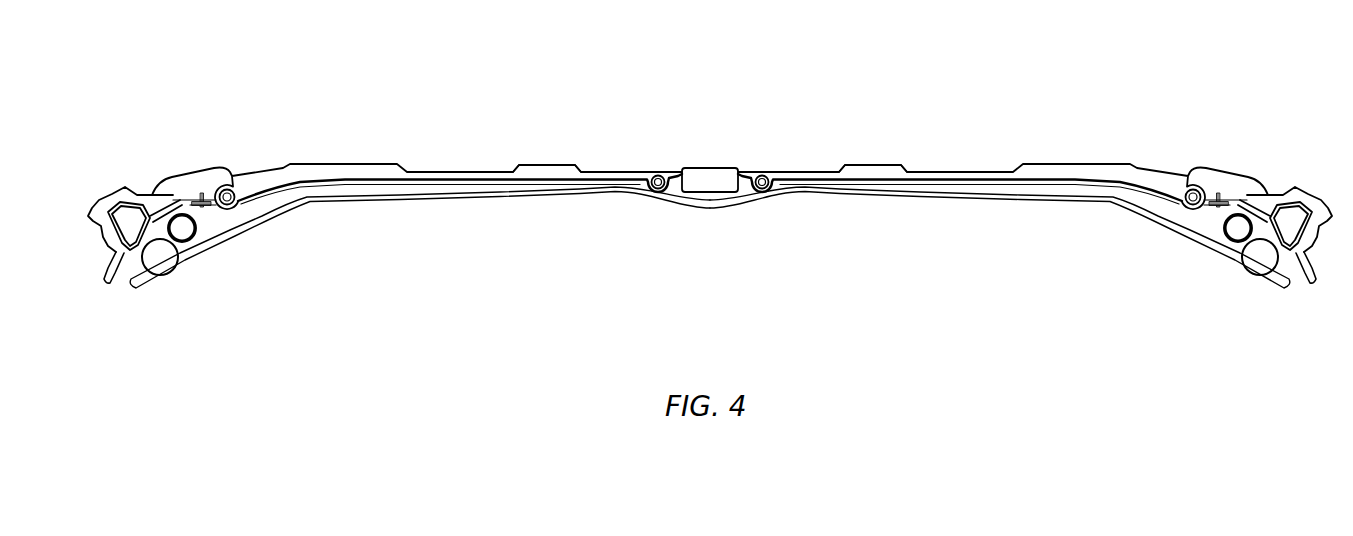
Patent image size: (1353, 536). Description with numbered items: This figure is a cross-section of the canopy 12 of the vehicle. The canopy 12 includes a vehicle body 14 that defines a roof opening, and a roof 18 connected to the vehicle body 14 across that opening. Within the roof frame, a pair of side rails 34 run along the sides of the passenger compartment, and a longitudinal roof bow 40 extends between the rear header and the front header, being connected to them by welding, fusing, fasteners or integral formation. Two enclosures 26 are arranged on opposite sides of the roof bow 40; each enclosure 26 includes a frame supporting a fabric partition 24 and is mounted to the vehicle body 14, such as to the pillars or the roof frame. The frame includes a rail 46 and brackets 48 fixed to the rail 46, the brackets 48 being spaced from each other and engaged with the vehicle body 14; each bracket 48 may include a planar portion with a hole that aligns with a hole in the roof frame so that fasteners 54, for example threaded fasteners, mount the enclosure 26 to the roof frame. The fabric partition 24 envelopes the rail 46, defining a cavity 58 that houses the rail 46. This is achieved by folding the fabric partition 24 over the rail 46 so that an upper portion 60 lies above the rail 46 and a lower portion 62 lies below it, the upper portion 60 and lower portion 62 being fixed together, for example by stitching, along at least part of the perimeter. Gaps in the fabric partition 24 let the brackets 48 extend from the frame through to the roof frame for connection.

The canopy 12 is at (978, 82).
The vehicle body 14 is at (113, 281).
The roof 18 is at (347, 163).
The fabric partition 24 is at (355, 183).
The enclosure 26 is at (466, 189).
The side rail 34 is at (147, 196).
The longitudinal roof bow 40 is at (705, 190).
The rail 46 is at (233, 190).
The bracket 48 is at (213, 208).
The fastener 54 is at (202, 193).
The cavity 58 is at (643, 184).
The upper portion 60 is at (520, 177).
The lower portion 62 is at (550, 186).